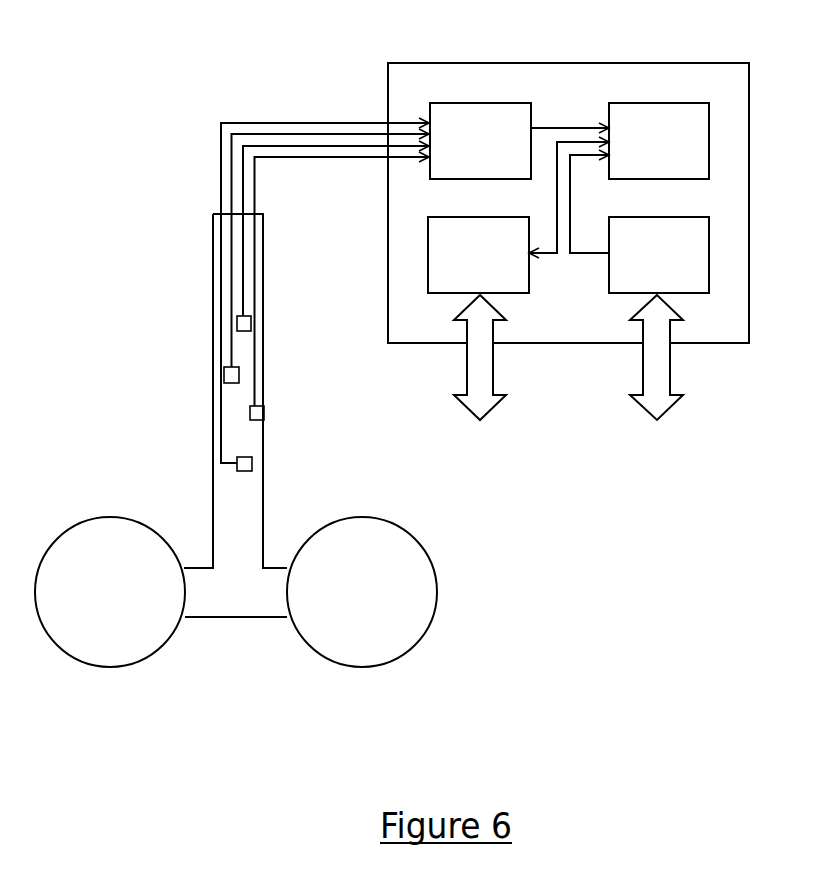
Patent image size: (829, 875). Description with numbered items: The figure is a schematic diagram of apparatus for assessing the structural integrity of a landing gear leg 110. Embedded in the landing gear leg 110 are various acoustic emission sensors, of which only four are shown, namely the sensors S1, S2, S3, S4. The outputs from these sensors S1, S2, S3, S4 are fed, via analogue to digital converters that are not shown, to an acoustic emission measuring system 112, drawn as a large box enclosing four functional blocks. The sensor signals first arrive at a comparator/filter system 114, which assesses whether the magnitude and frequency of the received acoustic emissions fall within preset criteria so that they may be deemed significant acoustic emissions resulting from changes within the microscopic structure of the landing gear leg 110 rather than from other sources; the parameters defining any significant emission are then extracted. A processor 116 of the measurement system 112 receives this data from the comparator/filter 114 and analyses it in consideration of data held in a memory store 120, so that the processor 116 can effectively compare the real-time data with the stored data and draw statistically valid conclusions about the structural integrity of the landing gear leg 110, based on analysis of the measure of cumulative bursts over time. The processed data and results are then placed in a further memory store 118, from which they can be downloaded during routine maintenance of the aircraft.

The landing gear leg 110 is at (260, 254).
The acoustic emission measuring system 112 is at (570, 332).
The comparator/filter system 114 is at (457, 151).
The processor 116 is at (636, 151).
The further memory store 118 is at (455, 265).
The memory store 120 is at (636, 265).
The acoustic emission sensor S1 is at (251, 323).
The acoustic emission sensor S2 is at (224, 372).
The acoustic emission sensor S3 is at (264, 410).
The acoustic emission sensor S4 is at (252, 463).